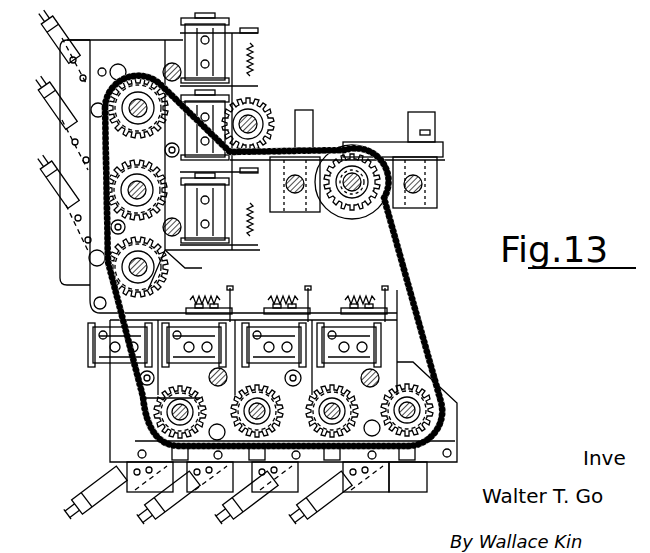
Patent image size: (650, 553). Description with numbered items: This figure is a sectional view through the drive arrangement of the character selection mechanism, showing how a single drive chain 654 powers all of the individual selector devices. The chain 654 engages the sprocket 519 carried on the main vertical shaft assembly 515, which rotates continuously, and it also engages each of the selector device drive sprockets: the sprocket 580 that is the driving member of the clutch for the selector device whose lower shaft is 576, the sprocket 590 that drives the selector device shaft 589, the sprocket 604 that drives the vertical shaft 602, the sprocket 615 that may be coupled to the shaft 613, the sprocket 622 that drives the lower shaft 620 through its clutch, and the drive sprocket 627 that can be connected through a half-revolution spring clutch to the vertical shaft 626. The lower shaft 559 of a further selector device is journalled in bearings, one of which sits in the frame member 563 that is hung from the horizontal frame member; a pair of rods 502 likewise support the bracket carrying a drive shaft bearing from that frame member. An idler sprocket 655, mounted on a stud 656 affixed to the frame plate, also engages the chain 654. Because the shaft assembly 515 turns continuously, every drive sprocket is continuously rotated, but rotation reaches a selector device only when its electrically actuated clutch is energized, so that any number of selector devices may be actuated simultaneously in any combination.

The rods 502 is at (423, 186).
The vertical shaft assembly 515 is at (357, 177).
The sprocket 519 is at (337, 231).
The lower shaft 559 is at (412, 408).
The frame member 563 is at (456, 418).
The lower shaft 576 is at (177, 414).
The drive sprocket 580 is at (142, 399).
The shaft 589 is at (259, 415).
The sprocket 590 is at (258, 400).
The vertical shaft 602 is at (333, 414).
The sprocket 604 is at (324, 384).
The shaft 613 is at (138, 269).
The sprocket 615 is at (201, 263).
The lower shaft 620 is at (134, 192).
The sprocket 622 is at (252, 261).
The vertical shaft 626 is at (138, 103).
The drive sprocket 627 is at (251, 261).
The drive chain 654 is at (424, 291).
The idler sprocket 655 is at (268, 106).
The stud 656 is at (254, 122).